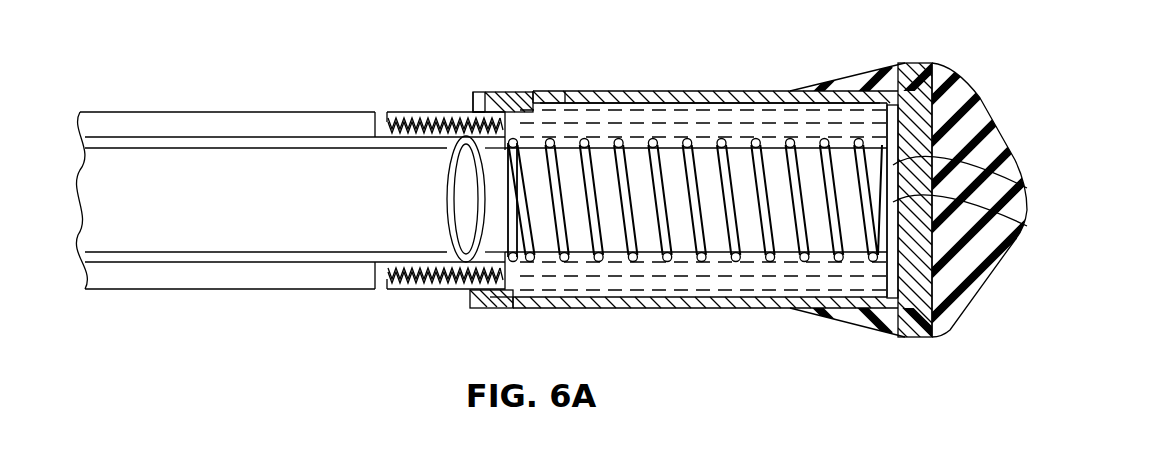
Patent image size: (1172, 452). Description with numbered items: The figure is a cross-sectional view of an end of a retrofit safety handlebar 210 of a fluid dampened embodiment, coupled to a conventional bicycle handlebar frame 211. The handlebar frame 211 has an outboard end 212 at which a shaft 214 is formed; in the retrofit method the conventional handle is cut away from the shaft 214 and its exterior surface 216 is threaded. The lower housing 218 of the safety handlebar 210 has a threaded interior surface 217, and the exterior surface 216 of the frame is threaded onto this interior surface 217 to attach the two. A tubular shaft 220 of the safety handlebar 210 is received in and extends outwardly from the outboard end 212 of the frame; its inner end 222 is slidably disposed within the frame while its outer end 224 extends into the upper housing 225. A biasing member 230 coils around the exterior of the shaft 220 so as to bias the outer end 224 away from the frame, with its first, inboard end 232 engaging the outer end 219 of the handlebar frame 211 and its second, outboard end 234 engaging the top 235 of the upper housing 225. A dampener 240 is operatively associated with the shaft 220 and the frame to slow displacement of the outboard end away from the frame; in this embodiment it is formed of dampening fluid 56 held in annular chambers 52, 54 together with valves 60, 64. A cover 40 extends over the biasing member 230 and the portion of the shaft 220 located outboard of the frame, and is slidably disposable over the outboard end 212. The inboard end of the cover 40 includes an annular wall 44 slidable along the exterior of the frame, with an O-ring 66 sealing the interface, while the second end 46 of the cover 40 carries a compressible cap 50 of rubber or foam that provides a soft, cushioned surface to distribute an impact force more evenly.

The handlebar frame 211 is at (205, 111).
The shaft 214 is at (347, 111).
The lower housing 218 is at (393, 112).
The exterior surface 216 is at (425, 113).
The outer end 219 is at (445, 118).
The interior surface 217 is at (497, 100).
The valve 60 is at (525, 105).
The outboard end 212 is at (565, 91).
The annular chamber 52 is at (600, 105).
The dampener 240 is at (655, 110).
The dampening fluid 56 is at (690, 105).
The retrofit safety handlebar 210 is at (707, 67).
The cover 40 is at (767, 91).
The outer end 224 is at (855, 140).
The compressible cap 50 is at (980, 110).
The second, outboard end 234 is at (1027, 188).
The top 235 is at (1027, 226).
The inner end 222 is at (108, 253).
The shaft 220 is at (245, 210).
The O-ring 66 is at (447, 212).
The annular wall 44 is at (470, 302).
The first, inboard end 232 is at (493, 305).
The valve 64 is at (505, 297).
The annular chamber 54 is at (575, 305).
The biasing member 230 is at (718, 258).
The upper housing 225 is at (852, 328).
The second end 46 is at (898, 332).